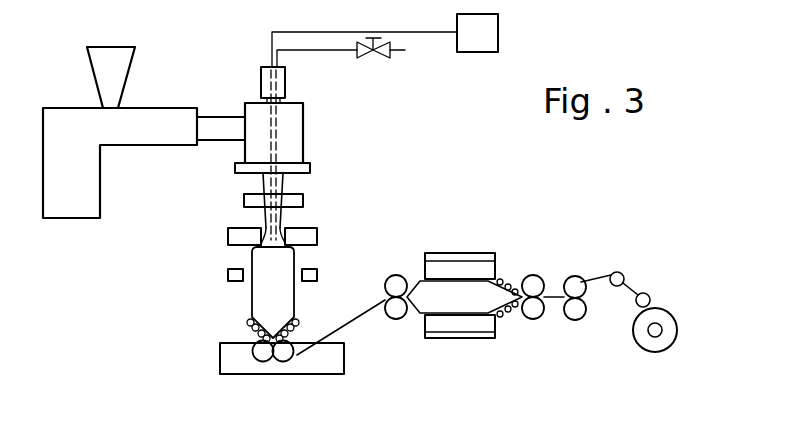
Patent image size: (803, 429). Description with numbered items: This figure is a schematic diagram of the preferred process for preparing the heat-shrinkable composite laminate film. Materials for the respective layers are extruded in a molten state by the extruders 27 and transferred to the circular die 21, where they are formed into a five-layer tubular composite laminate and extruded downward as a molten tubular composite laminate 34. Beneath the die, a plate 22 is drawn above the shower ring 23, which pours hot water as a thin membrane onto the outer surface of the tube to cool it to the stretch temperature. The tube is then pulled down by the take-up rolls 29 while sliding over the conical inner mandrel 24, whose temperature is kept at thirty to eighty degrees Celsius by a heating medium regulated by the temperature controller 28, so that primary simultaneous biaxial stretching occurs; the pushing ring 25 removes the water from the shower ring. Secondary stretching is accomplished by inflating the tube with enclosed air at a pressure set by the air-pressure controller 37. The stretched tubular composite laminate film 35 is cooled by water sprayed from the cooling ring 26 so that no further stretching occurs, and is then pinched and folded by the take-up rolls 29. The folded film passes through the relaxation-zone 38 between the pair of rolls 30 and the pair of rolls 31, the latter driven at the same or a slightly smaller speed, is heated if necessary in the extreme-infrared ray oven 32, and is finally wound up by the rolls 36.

The circular die 21 is at (293, 127).
The upper plate 22 is at (310, 168).
The shower ring 23 is at (303, 200).
The conical inner mandrel 24 is at (317, 234).
The pushing ring 25 is at (243, 236).
The cooling ring 26 is at (312, 282).
The extruder 27 is at (140, 120).
The temperature controller 28 is at (478, 52).
The take-up rolls 29 is at (263, 352).
The pair of rolls 30 is at (396, 322).
The pair of rolls 31 is at (530, 320).
The extreme-infrared ray oven 32 is at (458, 339).
The molten tubular composite laminate 34 is at (262, 183).
The stretched tubular composite laminate film 35 is at (251, 302).
The rolls 36 is at (641, 338).
The air-pressure controller 37 is at (372, 60).
The relaxation-zone 38 is at (543, 250).